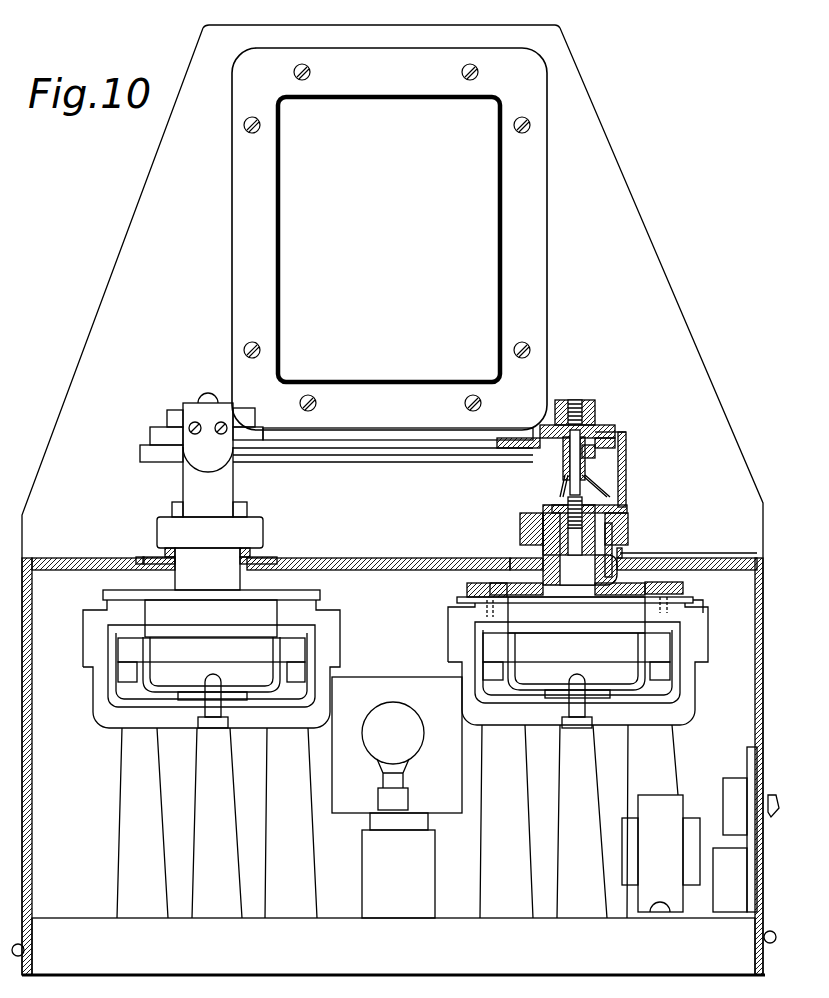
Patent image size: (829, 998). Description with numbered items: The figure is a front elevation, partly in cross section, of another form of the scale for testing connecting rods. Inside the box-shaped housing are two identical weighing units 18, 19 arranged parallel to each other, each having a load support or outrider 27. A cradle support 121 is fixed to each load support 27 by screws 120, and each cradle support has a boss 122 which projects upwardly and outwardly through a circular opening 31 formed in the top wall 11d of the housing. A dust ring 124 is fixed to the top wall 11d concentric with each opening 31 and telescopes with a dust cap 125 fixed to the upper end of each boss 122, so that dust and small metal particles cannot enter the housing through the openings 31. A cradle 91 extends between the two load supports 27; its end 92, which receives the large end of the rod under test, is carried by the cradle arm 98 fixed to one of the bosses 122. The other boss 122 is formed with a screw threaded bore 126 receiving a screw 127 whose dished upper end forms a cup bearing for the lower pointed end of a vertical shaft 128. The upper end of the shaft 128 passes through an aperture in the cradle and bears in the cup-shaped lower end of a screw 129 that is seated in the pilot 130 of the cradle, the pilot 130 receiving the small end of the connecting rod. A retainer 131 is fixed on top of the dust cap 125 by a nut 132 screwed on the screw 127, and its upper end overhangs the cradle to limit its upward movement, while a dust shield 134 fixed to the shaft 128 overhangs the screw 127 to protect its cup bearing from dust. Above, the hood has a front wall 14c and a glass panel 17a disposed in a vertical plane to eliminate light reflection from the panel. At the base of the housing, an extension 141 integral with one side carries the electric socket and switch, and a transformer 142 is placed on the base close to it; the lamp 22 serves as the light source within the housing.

The front wall of the hood 14c is at (115, 270).
The glass panel 17a is at (414, 272).
The top wall 11d is at (410, 562).
The cradle arm 98 is at (192, 476).
The cradle end 92 is at (147, 447).
The cradle member 91 is at (382, 447).
The dust cap 125 is at (543, 515).
The boss 122 is at (257, 560).
The circular opening 31 is at (325, 565).
The dust ring 124 is at (142, 560).
The screws 120 is at (487, 587).
The cradle support 121 is at (120, 597).
The load support 27 is at (395, 617).
The weighing unit 18 is at (115, 736).
The weighing unit 19 is at (706, 691).
The lamp 22 is at (397, 797).
The transformer 142 is at (661, 853).
The extension 141 is at (748, 765).
The screw 129 is at (574, 400).
The pilot 130 is at (593, 403).
The retainer 131 is at (626, 437).
The shaft 128 is at (590, 467).
The nut 132 is at (560, 500).
The dust shield 134 is at (592, 488).
The screw 127 is at (566, 520).
The screw threaded bore 126 is at (626, 522).